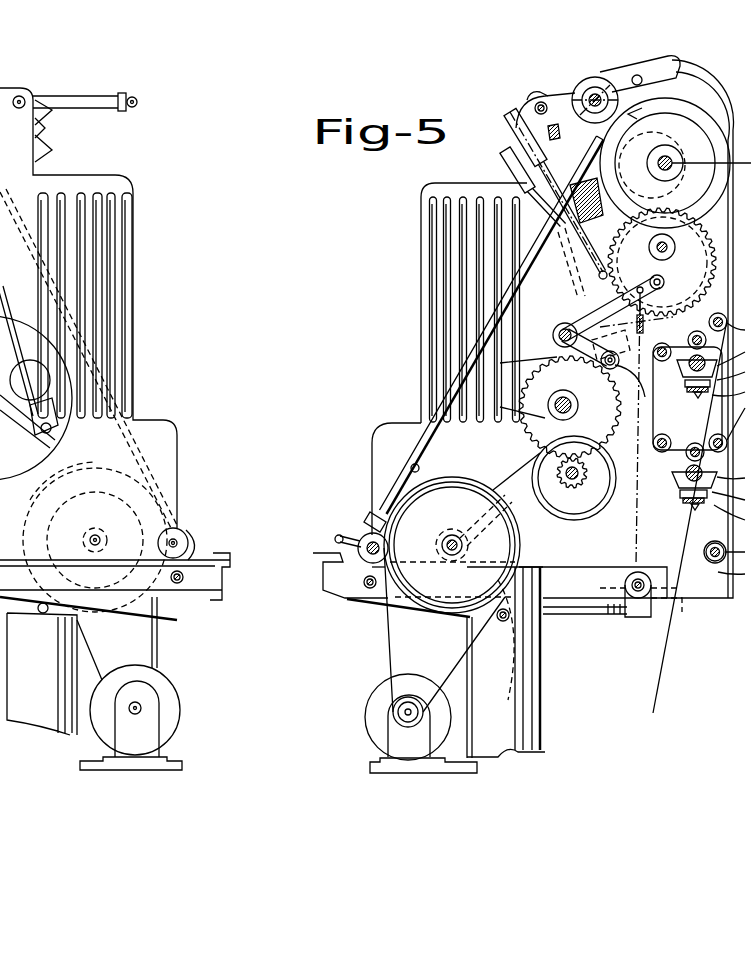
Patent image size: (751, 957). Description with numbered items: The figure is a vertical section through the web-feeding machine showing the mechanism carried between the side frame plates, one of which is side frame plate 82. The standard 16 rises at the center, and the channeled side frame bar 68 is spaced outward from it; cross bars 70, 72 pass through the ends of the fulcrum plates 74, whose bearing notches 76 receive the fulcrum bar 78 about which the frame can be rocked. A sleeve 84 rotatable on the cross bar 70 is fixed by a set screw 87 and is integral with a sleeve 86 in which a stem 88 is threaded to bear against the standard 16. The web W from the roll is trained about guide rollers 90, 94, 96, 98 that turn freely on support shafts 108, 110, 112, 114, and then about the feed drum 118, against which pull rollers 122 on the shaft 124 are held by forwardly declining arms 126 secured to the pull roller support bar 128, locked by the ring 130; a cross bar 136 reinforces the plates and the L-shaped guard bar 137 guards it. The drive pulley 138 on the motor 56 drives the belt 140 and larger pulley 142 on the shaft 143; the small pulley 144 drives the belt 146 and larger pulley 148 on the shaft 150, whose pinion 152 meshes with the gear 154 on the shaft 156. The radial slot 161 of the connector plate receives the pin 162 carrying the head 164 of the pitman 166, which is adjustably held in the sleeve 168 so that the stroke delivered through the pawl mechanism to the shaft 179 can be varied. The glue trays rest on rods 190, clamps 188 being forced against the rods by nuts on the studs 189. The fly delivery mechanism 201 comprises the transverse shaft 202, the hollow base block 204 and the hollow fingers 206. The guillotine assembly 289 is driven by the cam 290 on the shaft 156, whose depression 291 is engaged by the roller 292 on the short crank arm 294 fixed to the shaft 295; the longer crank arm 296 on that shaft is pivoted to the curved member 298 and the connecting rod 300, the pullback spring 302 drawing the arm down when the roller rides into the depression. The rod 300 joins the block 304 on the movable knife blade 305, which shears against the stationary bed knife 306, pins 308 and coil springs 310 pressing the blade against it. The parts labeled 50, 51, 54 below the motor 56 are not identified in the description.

The standard 16 is at (543, 672).
The base plate 50 is at (395, 773).
The caster assembly 51 is at (400, 745).
The caster fork 54 is at (388, 728).
The motor 56 is at (368, 708).
The side frame bar 68 is at (718, 599).
The cross bar 70 is at (615, 606).
The cross bar 72 is at (365, 590).
The fulcrum plate 74 is at (445, 618).
The bearing notch 76 is at (43, 615).
The fulcrum bar 78 is at (503, 622).
The side frame plate 82 is at (378, 445).
The sleeve 84 is at (623, 580).
The sleeve 86 is at (638, 618).
The set screw 87 is at (668, 599).
The stem 88 is at (560, 605).
The roller 90 is at (705, 549).
The roller 94 is at (714, 434).
The roller 96 is at (686, 445).
The roller 98 is at (663, 361).
The guide roller support shaft 108 is at (680, 473).
The guide roller support shaft 110 is at (663, 440).
The guide roller support shaft 112 is at (690, 340).
The guide roller support shaft 114 is at (711, 322).
The feed drum 118 is at (700, 135).
The pull roller 122 is at (583, 86).
The shaft 124 is at (595, 90).
The arm 126 is at (676, 68).
The pull roller support bar 128 is at (642, 80).
The ring 130 is at (640, 62).
The cross bar 136 is at (516, 110).
The guard bar 137 is at (133, 97).
The drive pulley 138 is at (400, 700).
The belt 140 is at (392, 642).
The pulley 142 is at (452, 478).
The shaft 143 is at (462, 540).
The small pulley 144 is at (458, 531).
The belt 146 is at (510, 479).
The pulley 148 is at (592, 502).
The shaft 150 is at (565, 479).
The pinion 152 is at (580, 478).
The gear 154 is at (553, 355).
The shaft 156 is at (563, 394).
The radial slot 161 is at (35, 378).
The pin 162 is at (42, 405).
The head 164 is at (40, 478).
The connecting rod 166 is at (28, 274).
The sleeve 168 is at (10, 175).
The shaft 179 is at (650, 246).
The clamp 188 is at (702, 388).
The stud 189 is at (694, 396).
The rod 190 is at (682, 494).
The fly delivery mechanism 201 is at (445, 392).
The shaft 202 is at (360, 535).
The base block 204 is at (330, 578).
The finger 206 is at (415, 440).
The knife assembly 289 is at (503, 156).
The cam 290 is at (537, 392).
The depression 291 is at (540, 388).
The roller 292 is at (661, 398).
The crank arm 294 is at (586, 312).
The shaft 295 is at (552, 322).
The crank arm 296 is at (558, 325).
The curved member 298 is at (654, 276).
The connecting rod 300 is at (545, 198).
The pullback spring 302 is at (662, 262).
The block 304 is at (530, 113).
The movable knife blade 305 is at (520, 113).
The bed knife 306 is at (535, 92).
The pin 308 is at (542, 101).
The compression spring 310 is at (560, 131).
The web W is at (690, 650).